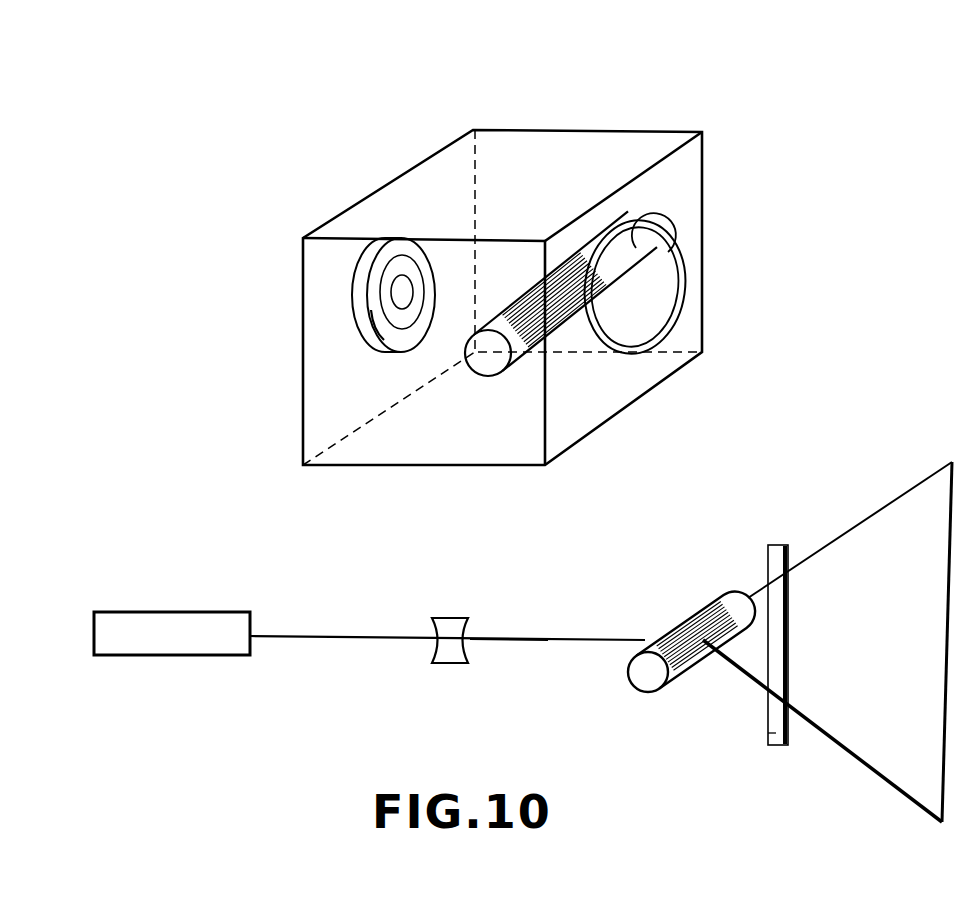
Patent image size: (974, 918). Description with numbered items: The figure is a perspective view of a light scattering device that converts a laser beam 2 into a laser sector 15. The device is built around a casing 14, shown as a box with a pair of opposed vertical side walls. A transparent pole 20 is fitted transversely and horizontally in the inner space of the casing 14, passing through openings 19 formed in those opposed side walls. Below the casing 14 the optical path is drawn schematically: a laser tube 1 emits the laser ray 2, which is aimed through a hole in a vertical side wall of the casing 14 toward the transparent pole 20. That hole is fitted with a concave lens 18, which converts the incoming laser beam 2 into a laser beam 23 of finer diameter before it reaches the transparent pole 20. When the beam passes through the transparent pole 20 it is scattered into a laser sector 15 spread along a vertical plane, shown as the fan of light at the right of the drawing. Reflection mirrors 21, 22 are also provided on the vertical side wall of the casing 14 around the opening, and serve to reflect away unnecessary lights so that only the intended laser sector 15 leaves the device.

The laser tube 1 is at (161, 608).
The laser beam 2 is at (327, 632).
The casing 14 is at (530, 148).
The laser sector 15 is at (900, 545).
The concave lens 18 is at (340, 275).
The openings 19 is at (671, 212).
The transparent pole 20 is at (573, 262).
The reflection mirror 21 is at (680, 264).
The reflection mirror 22 is at (650, 318).
The laser beam of finer diameter 23 is at (548, 638).